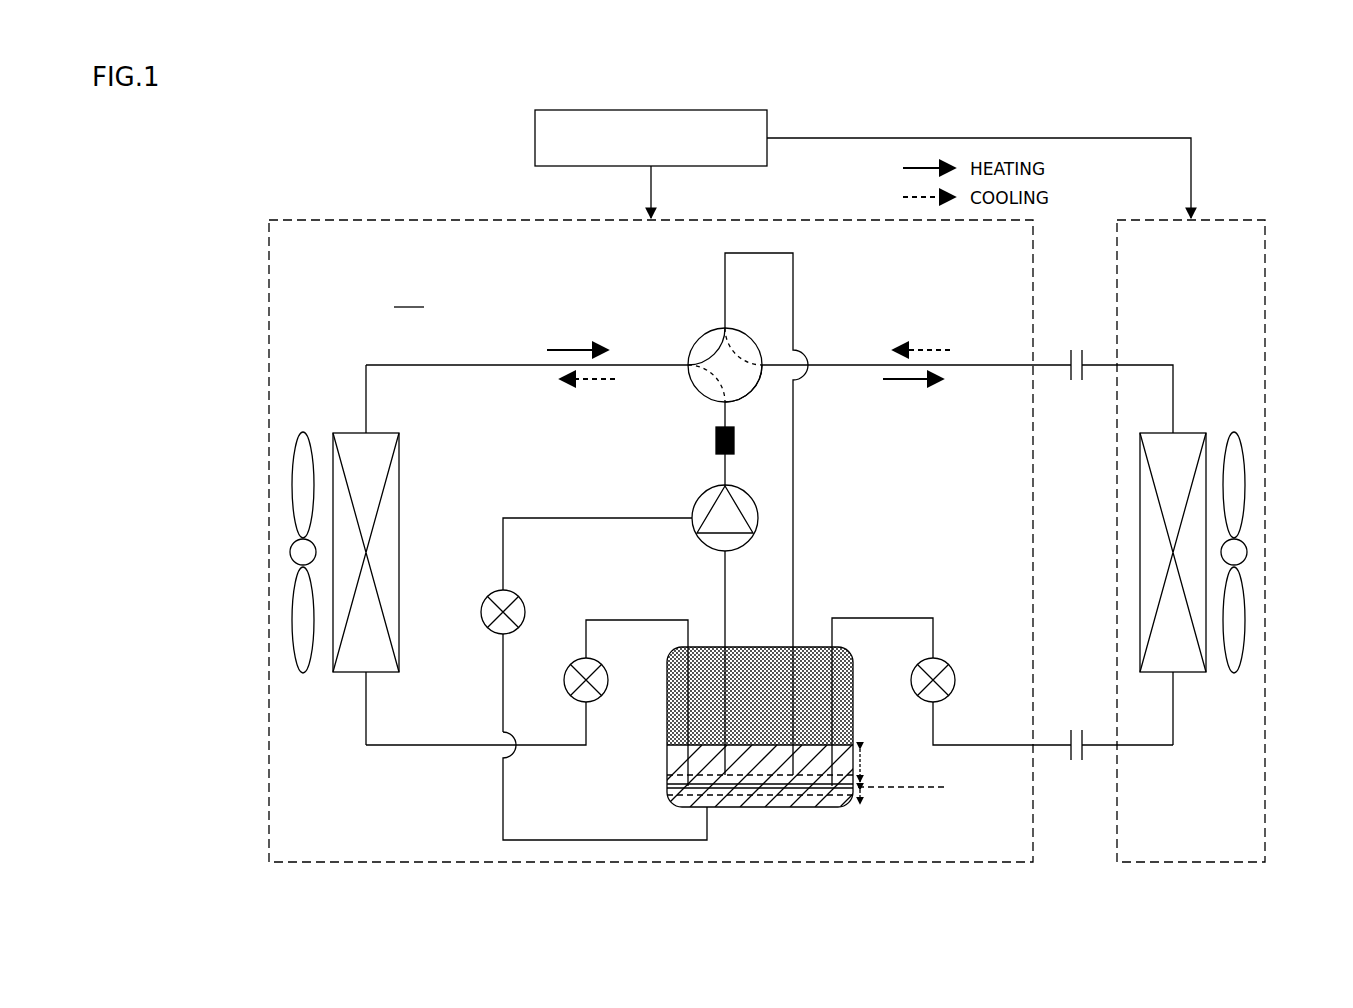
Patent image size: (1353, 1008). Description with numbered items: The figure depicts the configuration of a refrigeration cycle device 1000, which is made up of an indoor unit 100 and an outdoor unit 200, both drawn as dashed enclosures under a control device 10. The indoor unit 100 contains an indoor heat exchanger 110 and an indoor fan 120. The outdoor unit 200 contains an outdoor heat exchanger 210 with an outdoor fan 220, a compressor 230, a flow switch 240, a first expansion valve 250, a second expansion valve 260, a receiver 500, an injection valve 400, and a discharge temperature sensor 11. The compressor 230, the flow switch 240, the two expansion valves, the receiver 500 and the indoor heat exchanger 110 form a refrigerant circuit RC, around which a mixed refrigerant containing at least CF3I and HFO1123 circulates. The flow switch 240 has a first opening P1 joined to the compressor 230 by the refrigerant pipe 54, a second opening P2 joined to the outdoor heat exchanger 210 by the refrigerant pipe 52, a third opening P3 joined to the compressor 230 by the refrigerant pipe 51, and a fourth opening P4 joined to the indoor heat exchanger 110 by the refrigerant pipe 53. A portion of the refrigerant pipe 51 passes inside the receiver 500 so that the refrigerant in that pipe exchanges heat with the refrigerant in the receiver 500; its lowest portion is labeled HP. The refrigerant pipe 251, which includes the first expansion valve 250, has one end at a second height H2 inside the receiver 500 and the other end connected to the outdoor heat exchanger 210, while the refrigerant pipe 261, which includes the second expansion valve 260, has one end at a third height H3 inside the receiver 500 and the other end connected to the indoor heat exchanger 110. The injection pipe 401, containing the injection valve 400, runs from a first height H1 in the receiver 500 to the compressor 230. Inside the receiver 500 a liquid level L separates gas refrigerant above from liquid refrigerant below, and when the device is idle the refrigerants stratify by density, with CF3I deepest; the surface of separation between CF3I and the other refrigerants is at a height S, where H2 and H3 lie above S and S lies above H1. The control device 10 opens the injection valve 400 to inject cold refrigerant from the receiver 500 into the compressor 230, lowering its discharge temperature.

The refrigeration cycle device 1000 is at (1294, 130).
The control device 10 is at (712, 110).
The discharge temperature sensor 11 is at (714, 438).
The refrigerant pipe 51 is at (795, 270).
The refrigerant pipe 52 is at (482, 364).
The refrigerant pipe 53 is at (1000, 364).
The refrigerant pipe 54 is at (720, 474).
The indoor unit 100 is at (1232, 220).
The indoor heat exchanger 110 is at (1184, 432).
The indoor fan 120 is at (1246, 478).
The outdoor unit 200 is at (398, 220).
The outdoor heat exchanger 210 is at (346, 432).
The outdoor fan 220 is at (292, 620).
The compressor 230 is at (702, 541).
The flow switch 240 is at (722, 356).
The first expansion valve 250 is at (600, 667).
The refrigerant pipe 251 is at (548, 748).
The second expansion valve 260 is at (957, 679).
The refrigerant pipe 261 is at (882, 617).
The injection valve 400 is at (487, 597).
The injection pipe 401 is at (503, 812).
The receiver 500 is at (789, 739).
The refrigerant circuit RC is at (409, 296).
The first opening P1 is at (744, 412).
The second opening P2 is at (666, 356).
The third opening P3 is at (745, 316).
The fourth opening P4 is at (777, 356).
The lowest portion of the refrigerant pipe HP is at (667, 772).
The first height H1 is at (667, 798).
The second height H2 is at (667, 785).
The third height H3 is at (915, 789).
The height of the surface of separation S is at (667, 787).
The liquid level L is at (850, 748).